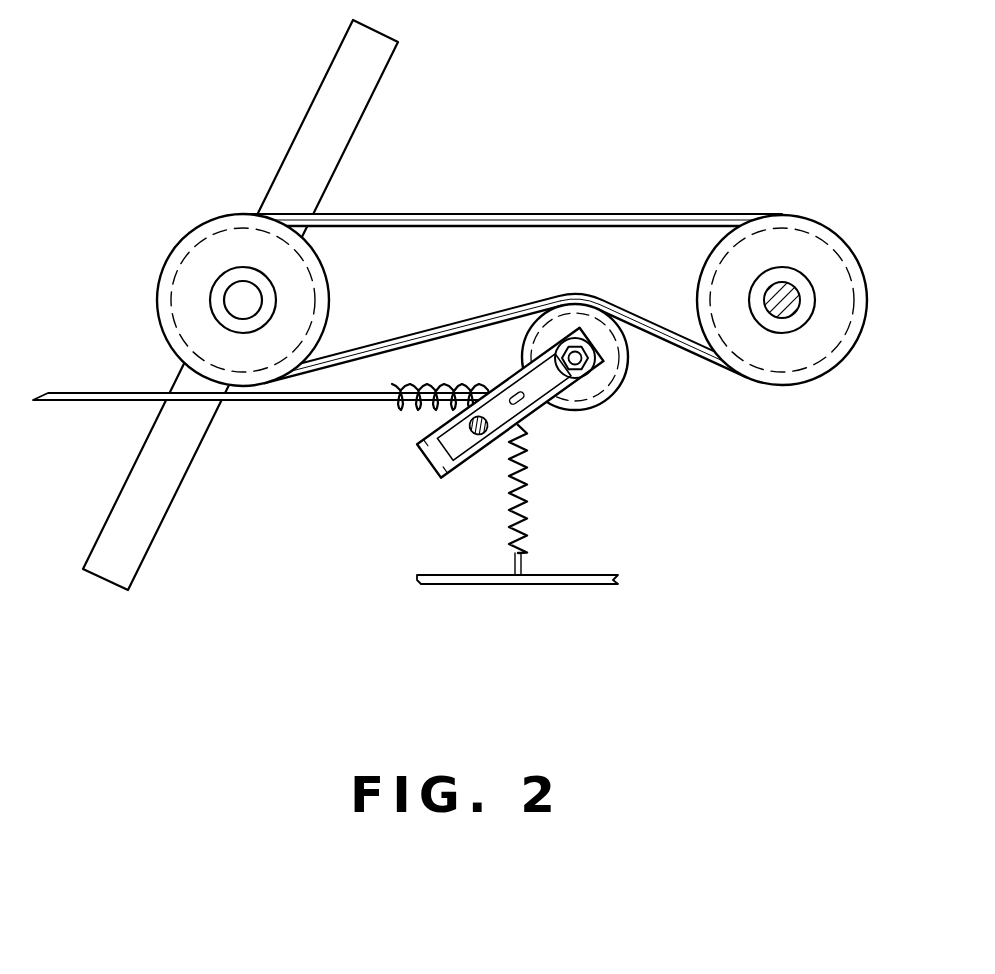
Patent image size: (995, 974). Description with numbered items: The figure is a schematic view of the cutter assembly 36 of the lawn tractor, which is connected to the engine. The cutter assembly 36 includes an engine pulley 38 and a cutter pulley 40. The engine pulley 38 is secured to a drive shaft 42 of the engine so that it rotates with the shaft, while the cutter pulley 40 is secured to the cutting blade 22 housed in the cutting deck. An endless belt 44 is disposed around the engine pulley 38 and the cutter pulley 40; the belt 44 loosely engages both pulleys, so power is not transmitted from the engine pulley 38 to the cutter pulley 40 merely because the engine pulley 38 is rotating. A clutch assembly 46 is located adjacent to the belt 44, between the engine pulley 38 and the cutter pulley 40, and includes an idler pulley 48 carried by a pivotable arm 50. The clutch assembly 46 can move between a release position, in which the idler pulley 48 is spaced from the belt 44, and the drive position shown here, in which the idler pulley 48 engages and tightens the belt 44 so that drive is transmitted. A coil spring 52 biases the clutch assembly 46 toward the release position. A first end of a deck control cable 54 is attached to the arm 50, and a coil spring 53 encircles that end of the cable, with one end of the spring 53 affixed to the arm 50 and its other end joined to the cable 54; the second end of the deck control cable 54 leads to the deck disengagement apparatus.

The cutting blade 22 is at (312, 120).
The cutter assembly 36 is at (623, 143).
The engine pulley 38 is at (750, 348).
The cutter pulley 40 is at (158, 318).
The drive shaft 42 is at (762, 300).
The endless belt 44 is at (465, 322).
The clutch assembly 46 is at (402, 533).
The idler pulley 48 is at (589, 405).
The pivotable arm 50 is at (423, 463).
The coil spring 52 is at (522, 512).
The coil spring 53 is at (404, 413).
The deck control cable 54 is at (283, 401).